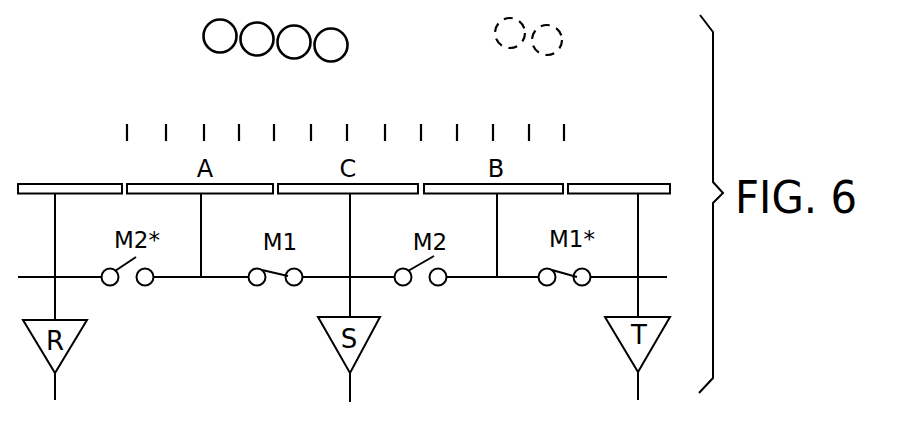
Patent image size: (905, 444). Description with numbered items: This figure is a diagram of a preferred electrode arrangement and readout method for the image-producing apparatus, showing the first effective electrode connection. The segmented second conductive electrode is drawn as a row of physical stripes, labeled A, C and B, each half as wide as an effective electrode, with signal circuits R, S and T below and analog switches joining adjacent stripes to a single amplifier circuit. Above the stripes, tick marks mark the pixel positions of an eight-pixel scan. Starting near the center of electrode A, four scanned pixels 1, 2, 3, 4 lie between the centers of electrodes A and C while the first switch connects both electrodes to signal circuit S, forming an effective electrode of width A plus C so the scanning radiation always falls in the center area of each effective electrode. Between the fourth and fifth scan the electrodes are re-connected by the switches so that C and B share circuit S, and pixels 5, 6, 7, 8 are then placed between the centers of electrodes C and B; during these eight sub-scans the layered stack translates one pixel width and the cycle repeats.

The scanned pixel 1 is at (215, 114).
The scanned pixel 2 is at (251, 114).
The scanned pixel 3 is at (287, 114).
The scanned pixel 4 is at (323, 114).
The scanned pixel 5 is at (361, 114).
The scanned pixel 6 is at (398, 114).
The scanned pixel 7 is at (434, 114).
The scanned pixel 8 is at (470, 114).